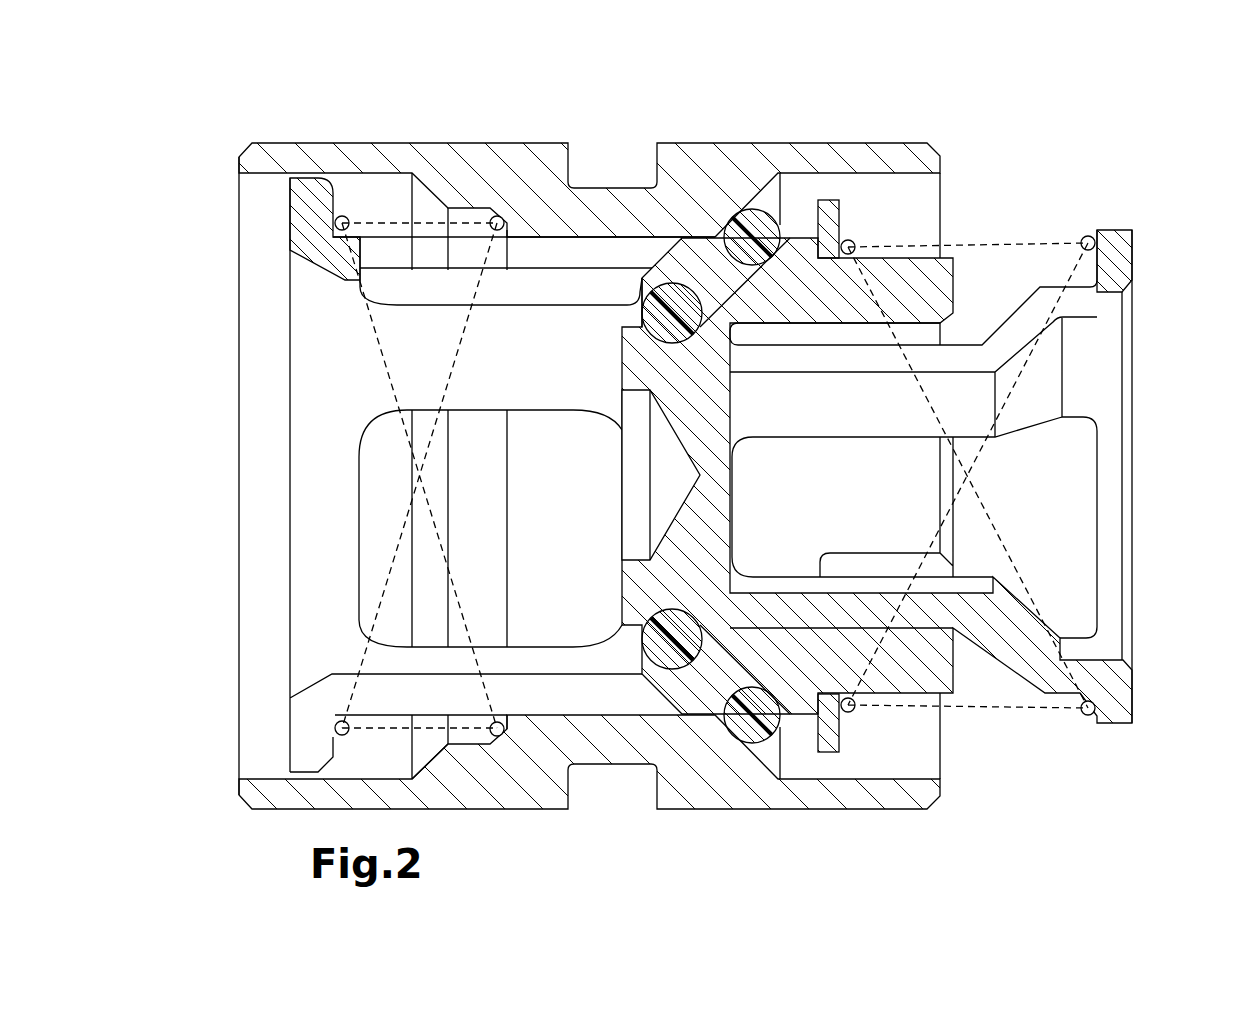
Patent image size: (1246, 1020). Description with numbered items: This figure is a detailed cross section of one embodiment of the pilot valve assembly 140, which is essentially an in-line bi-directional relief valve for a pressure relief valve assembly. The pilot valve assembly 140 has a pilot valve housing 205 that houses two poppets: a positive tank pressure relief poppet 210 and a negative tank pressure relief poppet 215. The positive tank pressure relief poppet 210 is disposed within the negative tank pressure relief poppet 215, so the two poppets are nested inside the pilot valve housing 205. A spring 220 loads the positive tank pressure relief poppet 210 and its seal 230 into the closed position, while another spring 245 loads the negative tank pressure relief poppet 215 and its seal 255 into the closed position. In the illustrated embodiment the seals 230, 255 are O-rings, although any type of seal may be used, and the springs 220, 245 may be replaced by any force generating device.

The pilot valve assembly 140 is at (207, 142).
The pilot valve housing 205 is at (483, 172).
The positive tank pressure relief poppet 210 is at (1045, 390).
The negative tank pressure relief poppet 215 is at (500, 357).
The spring 220 is at (1086, 236).
The seal 230 is at (660, 660).
The spring 245 is at (345, 215).
The seal 255 is at (757, 236).